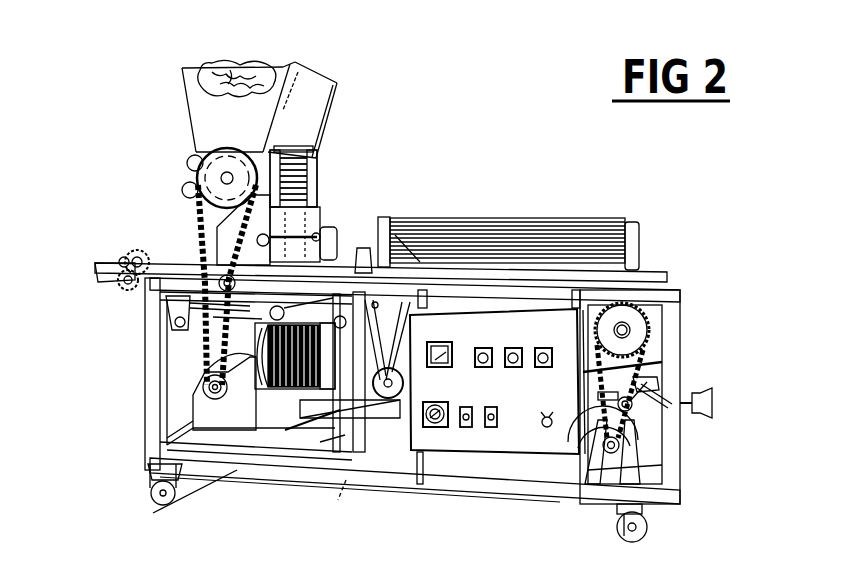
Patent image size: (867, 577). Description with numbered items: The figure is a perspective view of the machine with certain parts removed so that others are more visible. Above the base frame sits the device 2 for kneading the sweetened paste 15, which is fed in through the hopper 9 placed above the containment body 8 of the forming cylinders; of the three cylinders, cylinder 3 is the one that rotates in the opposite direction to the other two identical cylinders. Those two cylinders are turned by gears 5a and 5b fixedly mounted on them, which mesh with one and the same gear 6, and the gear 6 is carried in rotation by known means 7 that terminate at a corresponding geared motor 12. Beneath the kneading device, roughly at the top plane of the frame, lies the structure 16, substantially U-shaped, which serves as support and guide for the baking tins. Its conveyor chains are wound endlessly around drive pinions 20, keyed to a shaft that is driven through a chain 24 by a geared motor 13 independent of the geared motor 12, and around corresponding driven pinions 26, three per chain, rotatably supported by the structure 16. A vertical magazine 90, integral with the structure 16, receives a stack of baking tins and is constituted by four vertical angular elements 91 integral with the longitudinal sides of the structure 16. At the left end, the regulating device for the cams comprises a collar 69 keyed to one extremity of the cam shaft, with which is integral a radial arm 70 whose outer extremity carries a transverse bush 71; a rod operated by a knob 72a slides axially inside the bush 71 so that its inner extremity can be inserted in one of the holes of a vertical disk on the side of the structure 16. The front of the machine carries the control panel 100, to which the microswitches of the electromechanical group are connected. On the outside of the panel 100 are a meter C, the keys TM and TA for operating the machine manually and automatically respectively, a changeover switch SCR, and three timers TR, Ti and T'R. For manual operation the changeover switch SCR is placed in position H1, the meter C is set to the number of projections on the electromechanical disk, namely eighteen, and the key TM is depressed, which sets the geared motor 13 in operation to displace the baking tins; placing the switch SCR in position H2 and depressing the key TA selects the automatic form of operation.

The device for kneading sweetened paste 2 is at (239, 79).
The forming cylinder 3 is at (293, 183).
The gear 5a is at (200, 158).
The gear 5b is at (192, 188).
The gear 6 is at (232, 150).
The known means 7 is at (186, 217).
The containment body 8 is at (317, 158).
The hopper 9 is at (309, 92).
The geared motor 12 is at (290, 422).
The geared motor 13 is at (650, 437).
The sweetened paste 15 is at (240, 80).
The structure 16 is at (425, 420).
The drive pinions 20 is at (648, 322).
The chain 24 is at (650, 344).
The driven pinions 26 is at (425, 297).
The collar 69 is at (128, 292).
The radial arm 70 is at (116, 272).
The transverse bush 71 is at (142, 256).
The knob 72a is at (124, 260).
The vertical magazine 90 is at (648, 245).
The vertical angular elements 91 is at (383, 235).
The control panel 100 is at (459, 393).
The meter C is at (442, 343).
The timer TR is at (485, 350).
The timer Ti is at (515, 350).
The timer T'R is at (570, 261).
The key TM is at (462, 428).
The key TA is at (489, 428).
The changeover switch SCR is at (548, 430).
The position of changeover switch H1 is at (540, 396).
The position of changeover switch H2 is at (564, 396).